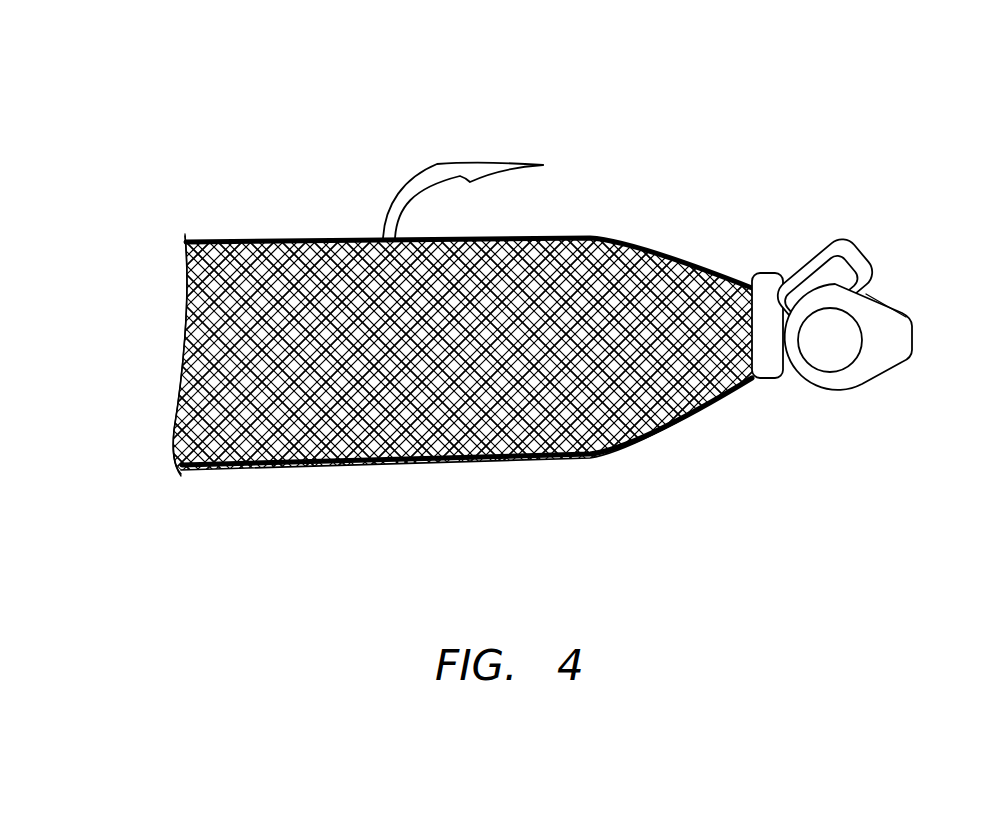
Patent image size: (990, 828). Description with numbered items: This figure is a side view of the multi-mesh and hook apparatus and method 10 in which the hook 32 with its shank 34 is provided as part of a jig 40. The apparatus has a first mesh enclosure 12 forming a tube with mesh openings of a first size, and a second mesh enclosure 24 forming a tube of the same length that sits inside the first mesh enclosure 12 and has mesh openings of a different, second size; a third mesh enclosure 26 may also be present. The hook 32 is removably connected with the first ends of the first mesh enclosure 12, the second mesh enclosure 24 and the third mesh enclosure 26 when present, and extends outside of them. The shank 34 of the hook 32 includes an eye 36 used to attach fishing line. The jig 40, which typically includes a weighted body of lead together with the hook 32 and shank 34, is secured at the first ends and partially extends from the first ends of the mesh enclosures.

The multi-mesh and hook apparatus and method 10 is at (495, 299).
The first mesh enclosure 12 is at (184, 358).
The second mesh enclosure 24 is at (176, 404).
The third mesh enclosure 26 is at (292, 440).
The hook 32 is at (463, 164).
The shank 34 is at (495, 463).
The eye 36 is at (875, 243).
The jig 40 is at (913, 330).